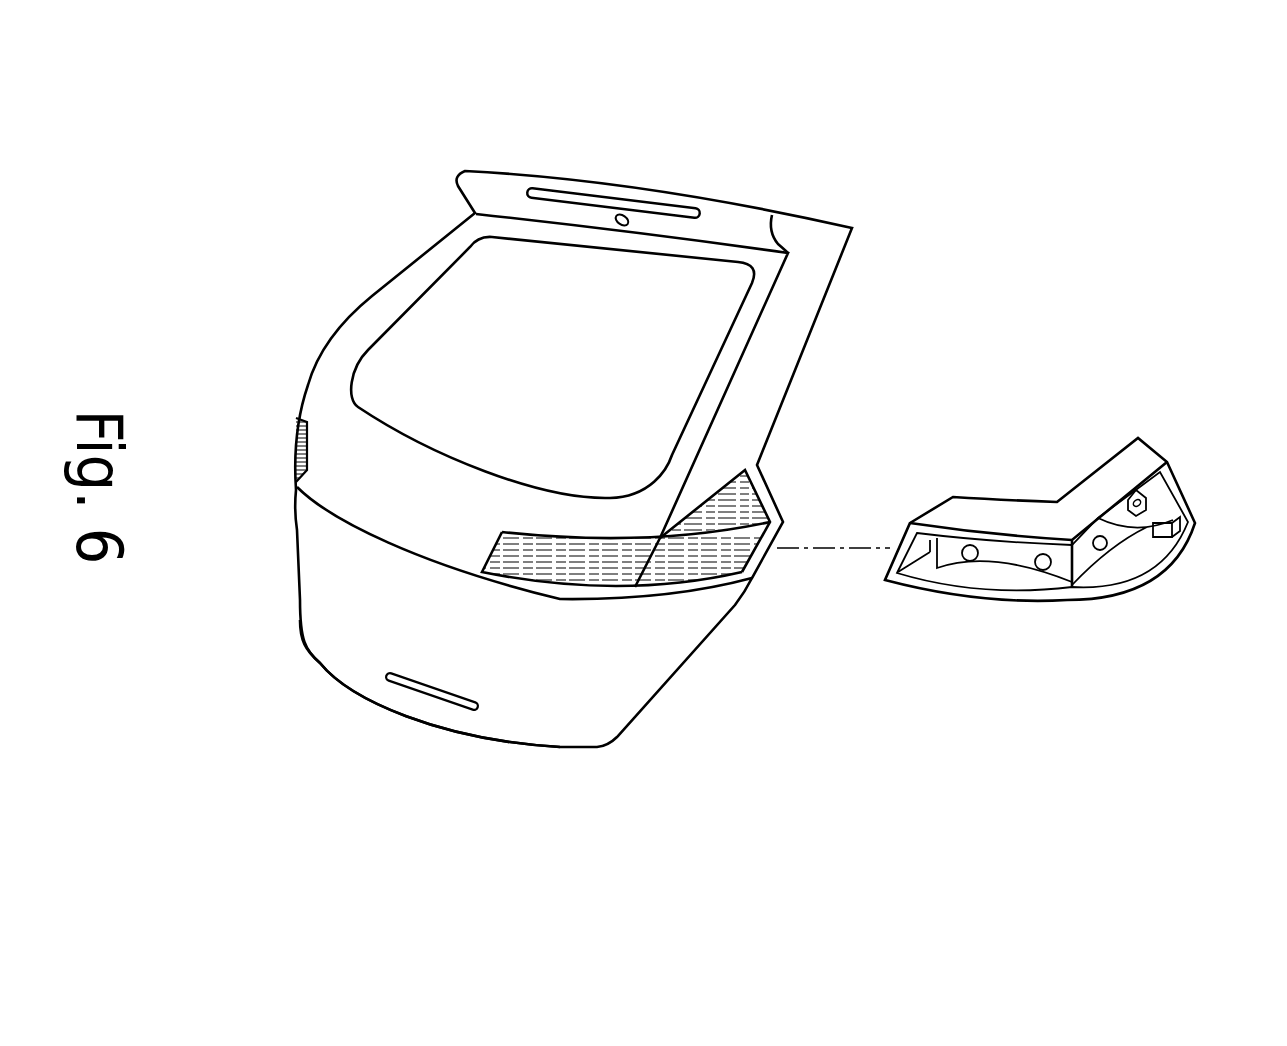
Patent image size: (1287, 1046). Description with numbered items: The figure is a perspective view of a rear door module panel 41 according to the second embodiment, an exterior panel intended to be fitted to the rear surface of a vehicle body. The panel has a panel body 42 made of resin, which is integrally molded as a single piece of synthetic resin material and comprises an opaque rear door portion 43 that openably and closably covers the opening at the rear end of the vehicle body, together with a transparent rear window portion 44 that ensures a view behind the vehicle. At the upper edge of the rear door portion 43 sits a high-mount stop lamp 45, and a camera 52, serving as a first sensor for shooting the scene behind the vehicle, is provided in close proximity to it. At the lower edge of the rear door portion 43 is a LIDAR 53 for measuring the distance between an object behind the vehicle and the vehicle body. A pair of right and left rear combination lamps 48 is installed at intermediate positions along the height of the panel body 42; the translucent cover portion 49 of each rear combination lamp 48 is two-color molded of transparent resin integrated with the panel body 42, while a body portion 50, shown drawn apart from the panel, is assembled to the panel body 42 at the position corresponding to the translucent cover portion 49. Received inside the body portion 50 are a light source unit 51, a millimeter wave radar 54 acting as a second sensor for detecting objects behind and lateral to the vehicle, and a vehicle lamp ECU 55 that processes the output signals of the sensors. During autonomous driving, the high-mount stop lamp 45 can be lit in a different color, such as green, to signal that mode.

The rear door module panel 41 is at (368, 238).
The panel body 42 is at (823, 307).
The rear door portion 43 is at (313, 585).
The rear window portion 44 is at (415, 450).
The high-mount stop lamp 45 is at (588, 198).
The rear combination lamp 48 is at (293, 455).
The translucent cover portion 49 is at (582, 572).
The body portion 50 is at (1076, 548).
The light source unit 51 is at (1048, 585).
The camera 52 is at (622, 230).
The LIDAR 53 is at (428, 697).
The millimeter wave radar 54 is at (1147, 497).
The vehicle lamp ECU 55 is at (1180, 530).